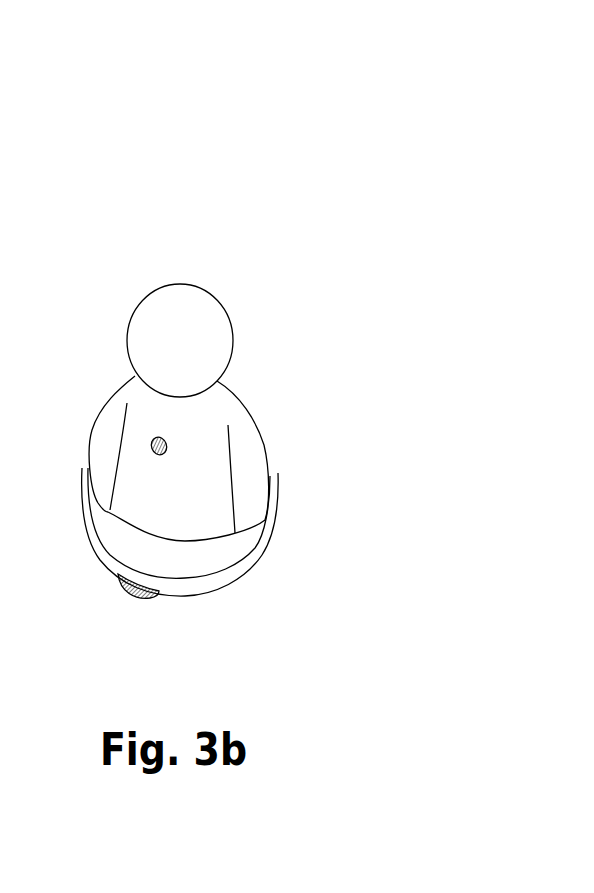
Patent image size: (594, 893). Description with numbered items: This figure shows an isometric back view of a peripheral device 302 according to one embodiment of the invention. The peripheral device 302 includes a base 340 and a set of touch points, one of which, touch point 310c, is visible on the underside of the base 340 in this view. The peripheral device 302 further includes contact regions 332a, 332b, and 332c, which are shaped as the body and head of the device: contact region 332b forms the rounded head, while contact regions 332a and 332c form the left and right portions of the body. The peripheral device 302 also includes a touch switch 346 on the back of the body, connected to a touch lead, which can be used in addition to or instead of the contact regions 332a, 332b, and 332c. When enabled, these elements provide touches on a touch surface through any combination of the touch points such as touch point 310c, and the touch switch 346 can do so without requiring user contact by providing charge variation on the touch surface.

The peripheral device 302 is at (449, 102).
The contact region 332a is at (106, 438).
The contact region 332b is at (171, 309).
The contact region 332c is at (251, 453).
The touch switch 346 is at (163, 460).
The base 340 is at (203, 570).
The touch point 310c is at (147, 603).